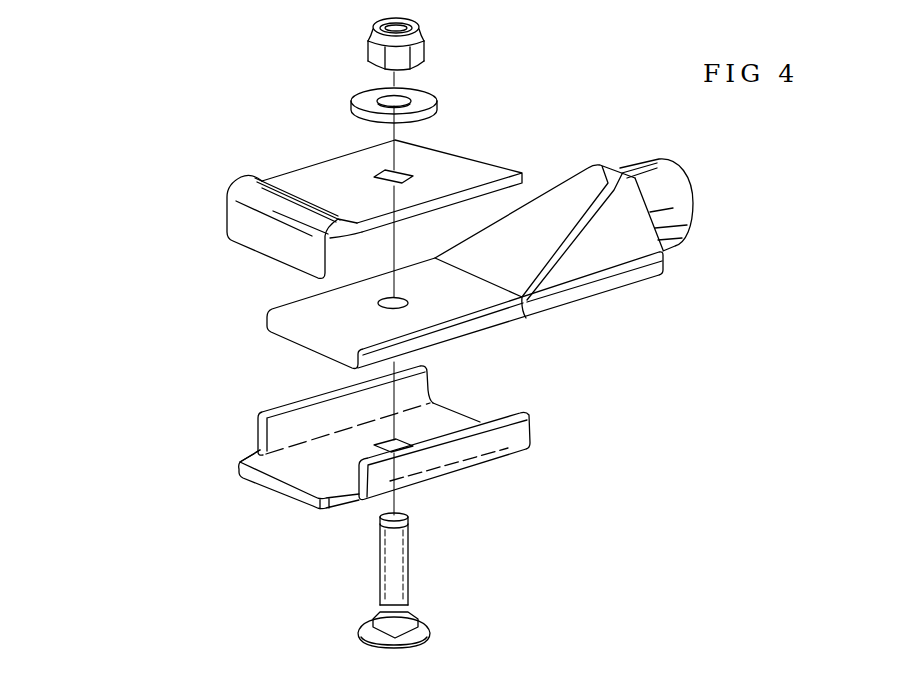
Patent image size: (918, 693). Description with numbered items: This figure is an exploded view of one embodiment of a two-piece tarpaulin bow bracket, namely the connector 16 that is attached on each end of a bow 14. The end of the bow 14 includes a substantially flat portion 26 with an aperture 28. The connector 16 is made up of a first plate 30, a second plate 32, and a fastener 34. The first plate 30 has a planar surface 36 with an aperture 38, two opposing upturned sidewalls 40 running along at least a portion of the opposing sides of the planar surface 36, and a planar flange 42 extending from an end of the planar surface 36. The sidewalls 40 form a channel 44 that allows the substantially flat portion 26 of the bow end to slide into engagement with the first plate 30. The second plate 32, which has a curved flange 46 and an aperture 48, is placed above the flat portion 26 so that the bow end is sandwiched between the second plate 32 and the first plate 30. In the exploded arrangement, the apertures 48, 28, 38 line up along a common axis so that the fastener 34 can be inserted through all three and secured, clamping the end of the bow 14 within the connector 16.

The connector 16 is at (128, 66).
The bow 14 is at (704, 294).
The substantially flat portion 26 is at (465, 300).
The aperture 28 is at (382, 303).
The first plate 30 is at (574, 466).
The second plate 32 is at (278, 121).
The fastener 34 is at (408, 608).
The planar surface 36 is at (302, 468).
The aperture 38 is at (400, 443).
The upturned sidewall 40 is at (450, 457).
The planar flange 42 is at (330, 458).
The channel 44 is at (243, 419).
The curved flange 46 is at (235, 195).
The aperture 48 is at (400, 173).